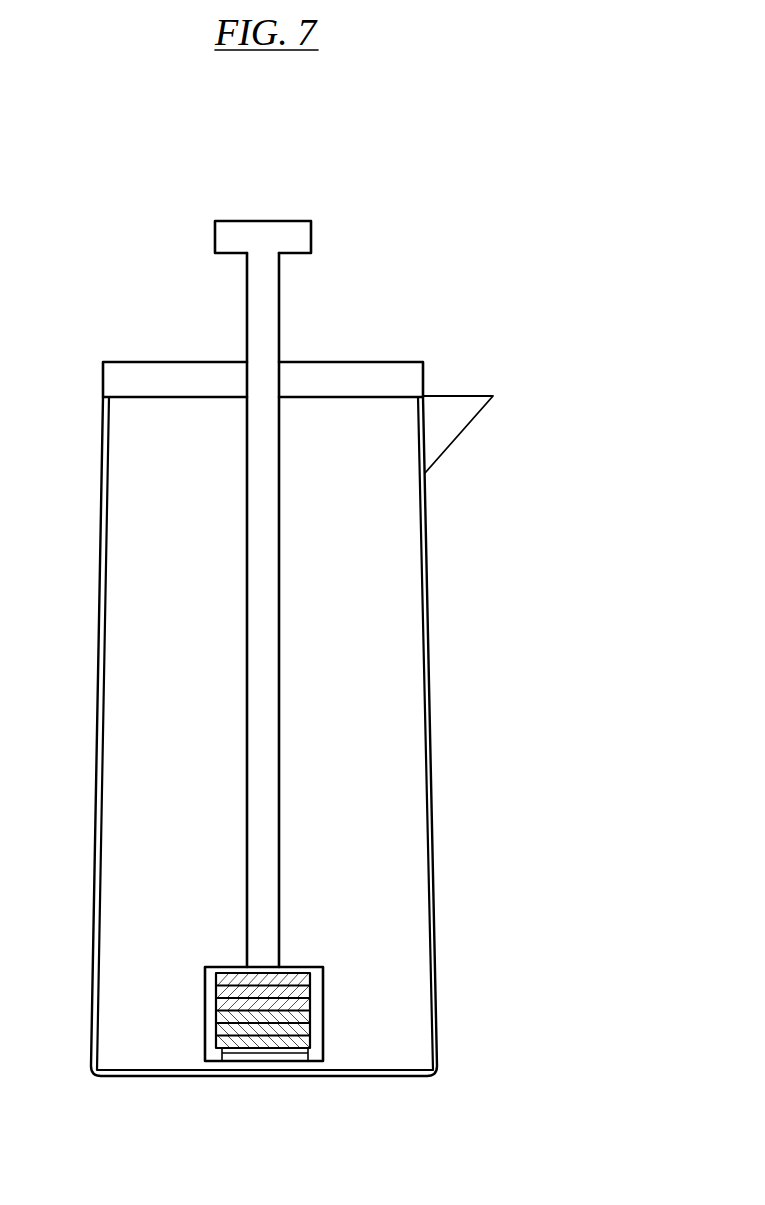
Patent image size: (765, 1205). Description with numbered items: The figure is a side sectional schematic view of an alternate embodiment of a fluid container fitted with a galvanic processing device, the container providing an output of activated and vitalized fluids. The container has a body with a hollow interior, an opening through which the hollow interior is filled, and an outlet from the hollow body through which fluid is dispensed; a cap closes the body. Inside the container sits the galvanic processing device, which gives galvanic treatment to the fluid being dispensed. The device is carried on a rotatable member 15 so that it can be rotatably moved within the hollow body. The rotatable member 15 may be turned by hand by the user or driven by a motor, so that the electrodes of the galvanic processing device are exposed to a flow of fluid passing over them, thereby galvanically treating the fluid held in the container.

The rotatable member 15 is at (280, 625).